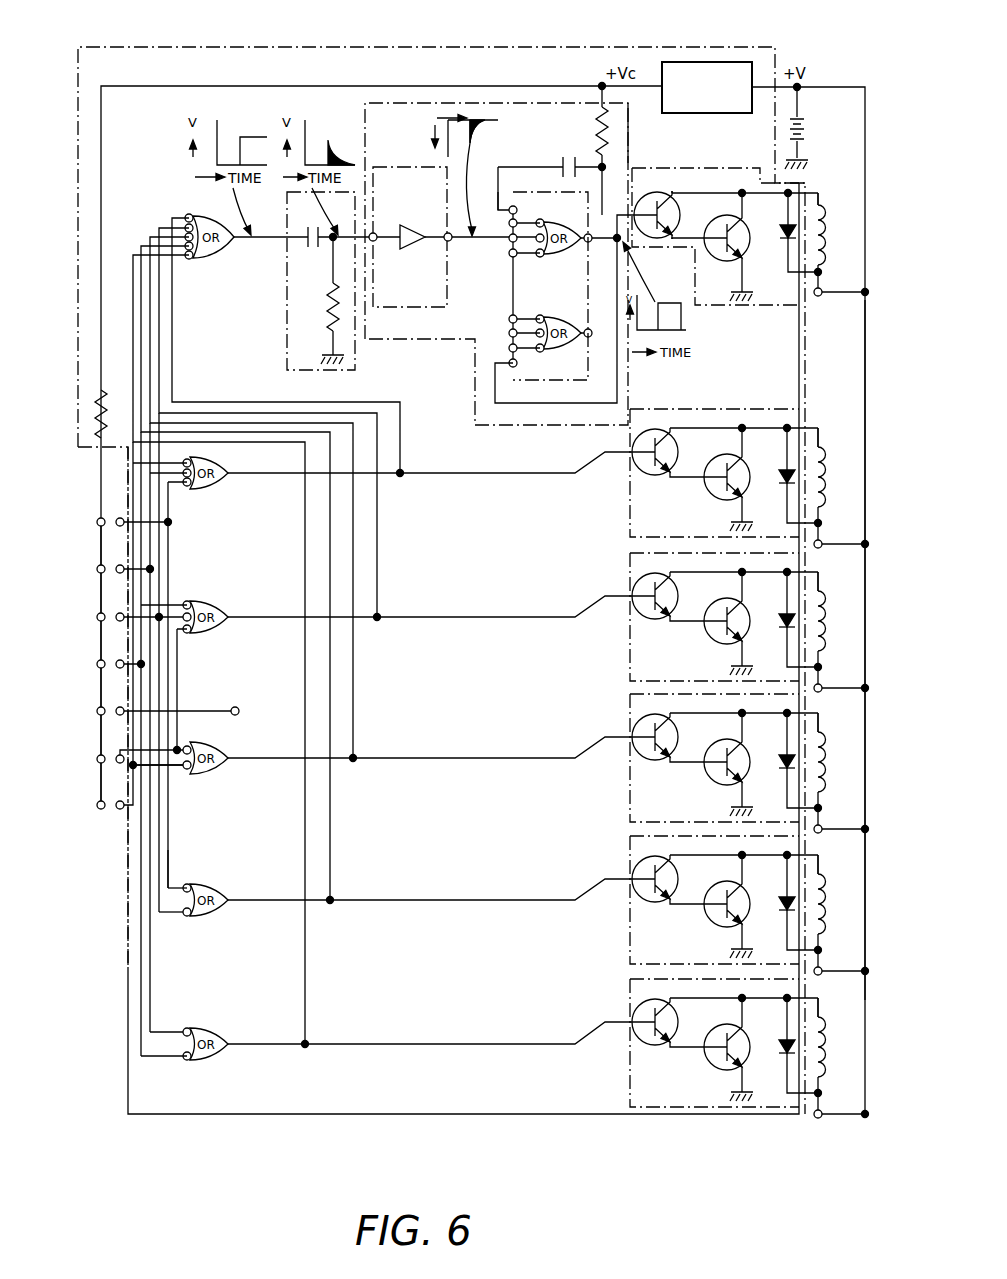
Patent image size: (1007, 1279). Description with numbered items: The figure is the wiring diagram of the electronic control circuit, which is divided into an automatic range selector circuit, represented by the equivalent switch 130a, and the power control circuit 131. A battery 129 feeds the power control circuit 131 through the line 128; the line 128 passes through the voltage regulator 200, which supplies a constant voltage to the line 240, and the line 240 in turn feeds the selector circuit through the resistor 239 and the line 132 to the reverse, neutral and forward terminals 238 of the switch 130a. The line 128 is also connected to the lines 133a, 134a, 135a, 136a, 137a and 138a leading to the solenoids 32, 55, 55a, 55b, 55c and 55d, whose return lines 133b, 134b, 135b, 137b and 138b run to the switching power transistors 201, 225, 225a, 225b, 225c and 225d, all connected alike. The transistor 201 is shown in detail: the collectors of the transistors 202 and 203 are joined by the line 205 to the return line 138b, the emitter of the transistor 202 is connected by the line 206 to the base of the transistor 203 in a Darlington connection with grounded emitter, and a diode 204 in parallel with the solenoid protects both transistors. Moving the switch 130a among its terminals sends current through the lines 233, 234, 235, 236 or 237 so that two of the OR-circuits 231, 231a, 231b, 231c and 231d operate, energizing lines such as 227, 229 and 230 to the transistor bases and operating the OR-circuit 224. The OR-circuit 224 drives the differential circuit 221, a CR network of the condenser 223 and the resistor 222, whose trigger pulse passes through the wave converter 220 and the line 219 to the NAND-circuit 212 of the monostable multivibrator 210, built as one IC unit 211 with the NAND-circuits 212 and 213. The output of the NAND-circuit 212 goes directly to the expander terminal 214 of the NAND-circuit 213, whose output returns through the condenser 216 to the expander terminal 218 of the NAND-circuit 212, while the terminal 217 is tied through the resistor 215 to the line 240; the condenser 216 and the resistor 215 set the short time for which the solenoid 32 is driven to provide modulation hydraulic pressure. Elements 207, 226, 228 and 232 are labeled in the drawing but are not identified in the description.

The power control circuit 131 is at (766, 46).
The constant voltage line 240 is at (475, 86).
The monostable multivibrator 210 is at (628, 122).
The resistor R 215 is at (608, 146).
The voltage regulator 200 is at (745, 115).
The line 205 is at (743, 253).
The battery 129 is at (813, 124).
The line 128 is at (866, 140).
The condenser C 216 is at (555, 140).
The expander terminal 218 is at (498, 195).
The terminal 217 is at (607, 198).
The transistor 202 is at (657, 192).
The line 206 is at (684, 236).
The diode 204 is at (782, 229).
The return line 138b is at (818, 192).
The solenoid 32 is at (830, 212).
The line 219 is at (480, 242).
The wave converter 220 is at (480, 266).
The NAND-circuit 212 is at (570, 252).
The transistor 203 is at (712, 258).
The ground conductor 207 is at (750, 260).
The line 138a is at (822, 296).
The OR-circuit 224 is at (232, 243).
The condenser 223 is at (306, 248).
The differential circuit 221 is at (286, 297).
The resistor 222 is at (325, 298).
The IC unit 211 is at (497, 297).
The NAND-circuit 213 is at (566, 343).
The switching power transistor 201 is at (733, 314).
The expander terminal 214 is at (545, 405).
The resistor 239 is at (96, 406).
The line 132 is at (98, 468).
The OR-circuit 231d is at (212, 490).
The conductor 226 is at (460, 477).
The return line 133b is at (818, 426).
The solenoid 55d is at (832, 470).
The line 133a is at (822, 528).
The switching power transistor 225d is at (738, 470).
The OR-circuit 231c is at (212, 600).
The line 227 is at (458, 614).
The return line 134b is at (818, 570).
The solenoid 55c is at (832, 627).
The line 134a is at (822, 672).
The switching power transistor 225c is at (738, 624).
The line 237 is at (178, 728).
The OR-circuit 231b is at (217, 748).
The conductor 228 is at (512, 757).
The return line 135b is at (818, 711).
The solenoid 55b is at (832, 772).
The line 135a is at (822, 813).
The switching power transistor 225b is at (738, 767).
The line 236 is at (176, 770).
The terminals 238 is at (97, 812).
The line 235 is at (168, 850).
The equivalent switch 130a is at (104, 816).
The OR-circuit 231a is at (207, 888).
The line 229 is at (500, 898).
The line 136a is at (818, 853).
The solenoid 55a is at (832, 913).
The switching power transistor 225a is at (738, 908).
The line 233 is at (175, 914).
The logic circuit 232 is at (140, 942).
The line 234 is at (150, 997).
The OR-circuit 231 is at (205, 1030).
The line 230 is at (482, 1042).
The return line 137b is at (818, 996).
The solenoid 55 is at (832, 1053).
The line 137a is at (822, 1098).
The switching power transistor 225 is at (738, 1048).